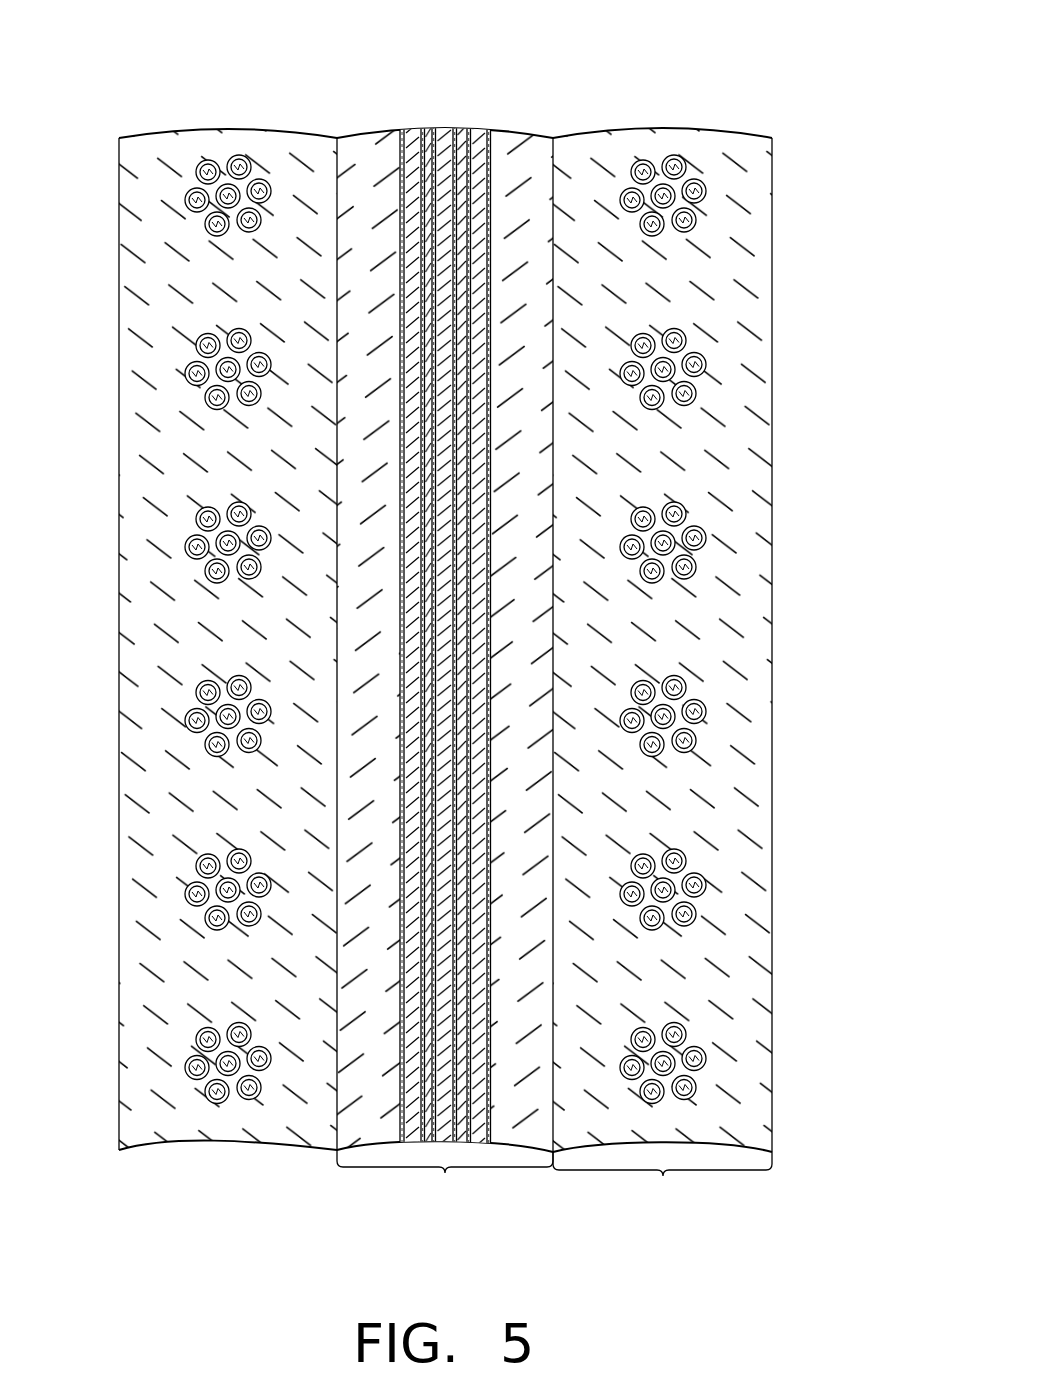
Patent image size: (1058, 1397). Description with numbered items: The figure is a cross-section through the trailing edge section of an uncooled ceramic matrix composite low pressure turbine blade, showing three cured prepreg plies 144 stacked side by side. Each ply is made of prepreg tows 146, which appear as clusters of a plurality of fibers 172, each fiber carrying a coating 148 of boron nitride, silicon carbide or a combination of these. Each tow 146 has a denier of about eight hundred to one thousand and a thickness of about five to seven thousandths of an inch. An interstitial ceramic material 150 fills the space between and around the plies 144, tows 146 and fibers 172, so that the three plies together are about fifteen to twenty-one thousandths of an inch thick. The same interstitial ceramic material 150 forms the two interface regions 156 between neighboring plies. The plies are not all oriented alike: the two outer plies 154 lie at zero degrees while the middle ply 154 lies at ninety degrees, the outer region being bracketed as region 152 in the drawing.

The cured prepreg plies 144 is at (498, 52).
The prepreg tows 146 is at (436, 128).
The coating 148 is at (487, 132).
The interstitial ceramic material 150 is at (750, 992).
The outer layer region 152 is at (663, 1176).
The outer plies 154 is at (445, 1173).
The interface regions 156 is at (327, 1124).
The fibers 172 is at (705, 186).